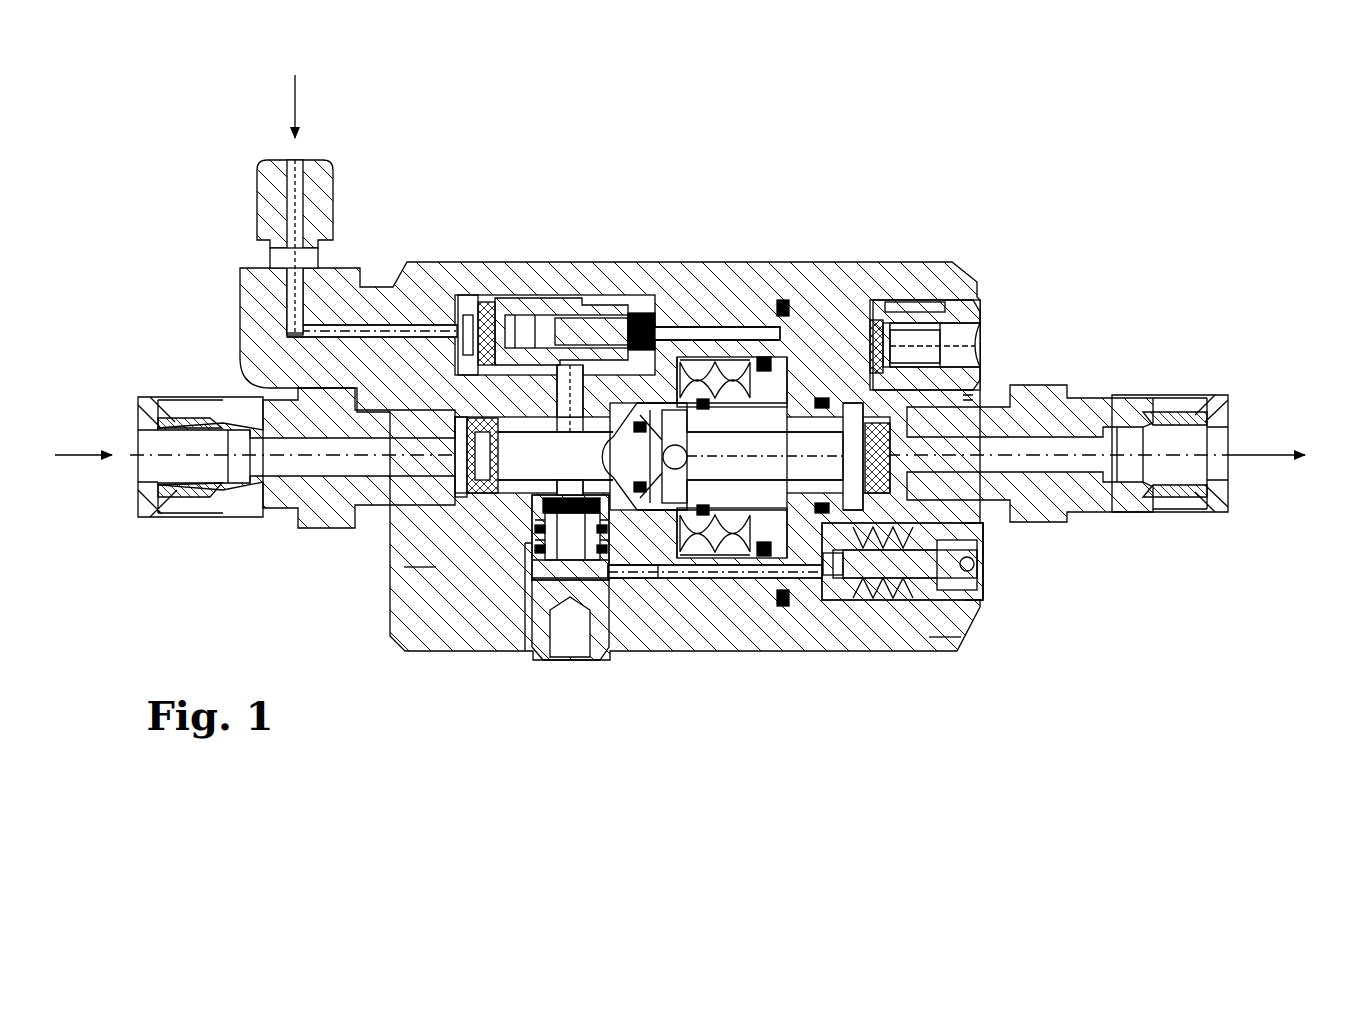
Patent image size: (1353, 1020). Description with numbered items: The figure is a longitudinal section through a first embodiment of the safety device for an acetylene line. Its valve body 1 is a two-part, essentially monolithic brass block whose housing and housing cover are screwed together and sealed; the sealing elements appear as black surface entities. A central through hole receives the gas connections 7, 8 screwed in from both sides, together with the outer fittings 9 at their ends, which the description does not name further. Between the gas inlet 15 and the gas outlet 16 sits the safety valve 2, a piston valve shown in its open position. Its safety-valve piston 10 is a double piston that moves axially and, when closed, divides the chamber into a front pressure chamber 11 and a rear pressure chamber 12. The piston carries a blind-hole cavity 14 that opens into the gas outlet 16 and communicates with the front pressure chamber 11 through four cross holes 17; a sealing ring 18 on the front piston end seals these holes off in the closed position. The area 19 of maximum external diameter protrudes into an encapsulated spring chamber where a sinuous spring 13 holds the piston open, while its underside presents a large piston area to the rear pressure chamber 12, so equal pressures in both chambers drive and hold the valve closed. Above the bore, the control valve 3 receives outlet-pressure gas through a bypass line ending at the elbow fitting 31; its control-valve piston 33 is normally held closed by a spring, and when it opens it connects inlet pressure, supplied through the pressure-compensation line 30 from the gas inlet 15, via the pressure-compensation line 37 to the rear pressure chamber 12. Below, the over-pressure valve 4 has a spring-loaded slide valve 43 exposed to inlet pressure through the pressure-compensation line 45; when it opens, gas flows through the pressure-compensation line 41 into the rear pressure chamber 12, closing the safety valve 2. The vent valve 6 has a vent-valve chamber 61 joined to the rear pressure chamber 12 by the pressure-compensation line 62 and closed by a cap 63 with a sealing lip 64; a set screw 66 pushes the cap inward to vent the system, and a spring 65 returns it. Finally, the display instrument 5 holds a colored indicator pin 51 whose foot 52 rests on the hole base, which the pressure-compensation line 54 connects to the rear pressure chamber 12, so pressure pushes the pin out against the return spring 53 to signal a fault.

The valve body 1 is at (468, 258).
The safety valve 2 is at (653, 392).
The control valve 3 is at (533, 280).
The over-pressure valve 4 is at (567, 667).
The display instrument 5 is at (1002, 593).
The vent valve 6 is at (999, 307).
The gas connection 7 is at (245, 417).
The gas connection 8 is at (1083, 482).
The union nut 9 is at (172, 438).
The safety-valve piston 10 is at (712, 462).
The front pressure chamber 11 is at (615, 582).
The rear pressure chamber 12 is at (783, 592).
The sinuous spring 13 is at (720, 360).
The cavity 14 is at (747, 500).
The gas inlet 15 is at (520, 474).
The gas outlet 16 is at (865, 470).
The cross holes 17 is at (693, 530).
The sealing ring 18 is at (647, 513).
The area with the maximum external diameter 19 is at (771, 358).
The pressure-compensation line 30 is at (587, 340).
The elbow fitting 31 is at (350, 266).
The control-valve piston 33 is at (557, 300).
The pressure-compensation line 37 is at (692, 330).
The pressure-compensation line 41 is at (677, 575).
The slide valve 43 is at (550, 565).
The pressure-compensation line 45 is at (570, 537).
The indicator pin 51 is at (985, 607).
The foot 52 is at (865, 605).
The return spring 53 is at (893, 597).
The pressure-compensation line 54 is at (845, 597).
The vent-valve chamber 61 is at (850, 330).
The pressure-compensation line 62 is at (795, 345).
The cap 63 is at (886, 322).
The sealing lip 64 is at (912, 307).
The spring 65 is at (876, 318).
The set screw 66 is at (950, 348).